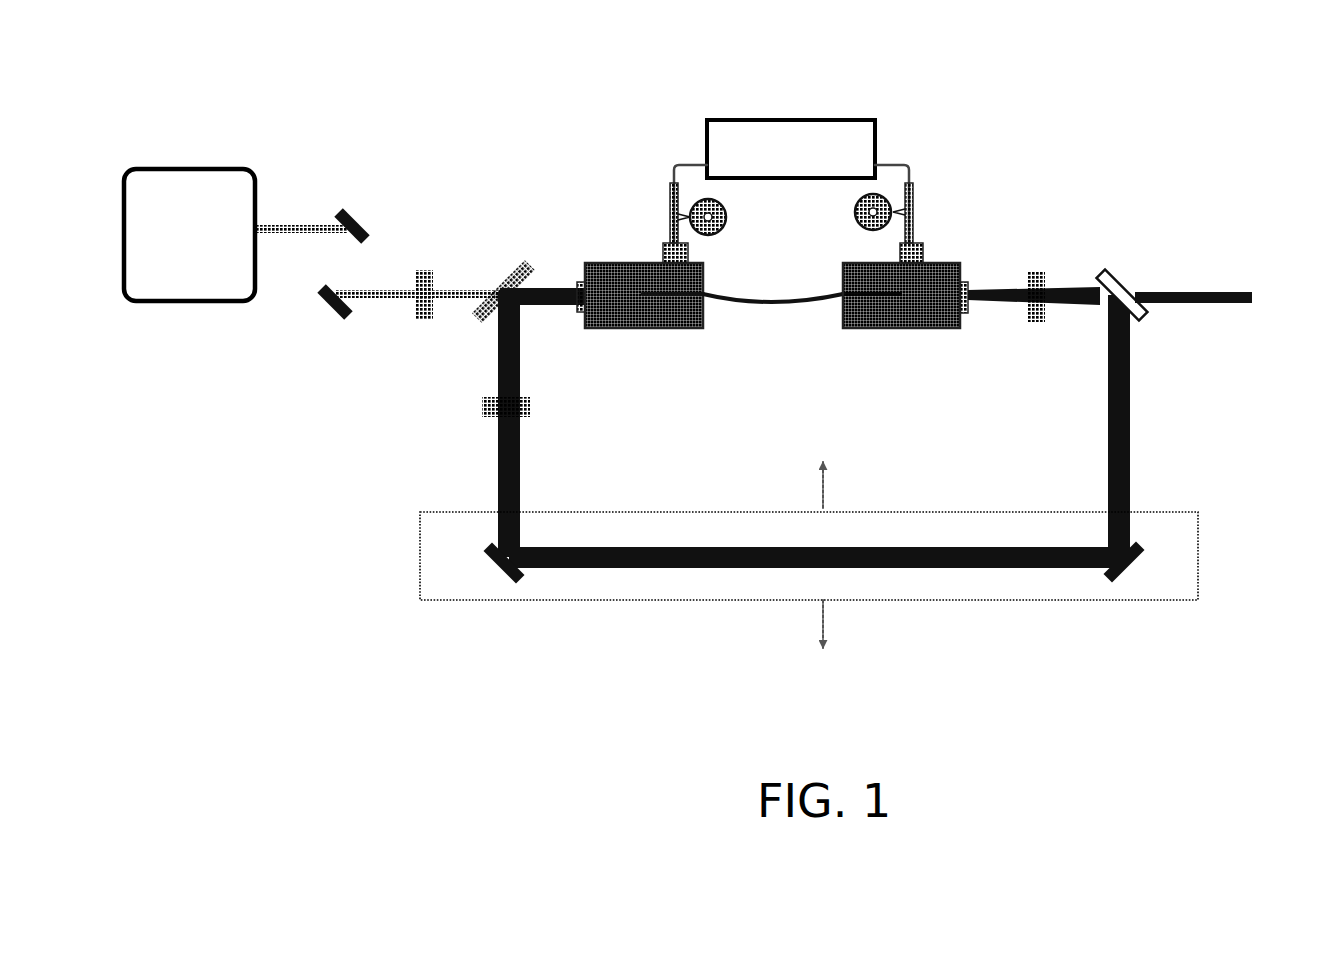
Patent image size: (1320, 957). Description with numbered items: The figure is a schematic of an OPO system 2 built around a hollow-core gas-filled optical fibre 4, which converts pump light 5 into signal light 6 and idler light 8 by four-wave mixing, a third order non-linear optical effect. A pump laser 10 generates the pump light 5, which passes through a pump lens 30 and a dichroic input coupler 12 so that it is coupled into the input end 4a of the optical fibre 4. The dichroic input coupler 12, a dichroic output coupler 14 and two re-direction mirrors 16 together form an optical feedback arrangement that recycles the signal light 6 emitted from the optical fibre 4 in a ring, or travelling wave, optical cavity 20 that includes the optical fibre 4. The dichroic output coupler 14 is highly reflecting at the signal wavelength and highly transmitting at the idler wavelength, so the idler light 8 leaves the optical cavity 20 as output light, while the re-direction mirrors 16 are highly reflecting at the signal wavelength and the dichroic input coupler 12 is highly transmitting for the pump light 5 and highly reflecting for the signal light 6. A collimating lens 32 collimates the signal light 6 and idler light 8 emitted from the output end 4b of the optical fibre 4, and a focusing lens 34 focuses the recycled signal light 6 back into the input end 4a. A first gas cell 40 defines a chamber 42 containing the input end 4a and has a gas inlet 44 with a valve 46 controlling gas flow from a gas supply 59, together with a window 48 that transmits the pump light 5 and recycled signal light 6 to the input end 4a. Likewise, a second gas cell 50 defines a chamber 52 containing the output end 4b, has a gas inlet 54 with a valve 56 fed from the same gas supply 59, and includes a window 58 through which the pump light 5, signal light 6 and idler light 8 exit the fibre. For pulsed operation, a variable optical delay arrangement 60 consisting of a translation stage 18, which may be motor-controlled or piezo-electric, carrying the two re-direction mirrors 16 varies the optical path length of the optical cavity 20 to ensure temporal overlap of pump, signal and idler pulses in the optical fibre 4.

The OPO system 2 is at (245, 616).
The hollow-core gas-filled optical fibre 4 is at (761, 324).
The input end 4a is at (645, 302).
The output end 4b is at (898, 305).
The pump light 5 is at (290, 231).
The signal light 6 is at (1130, 402).
The idler light 8 is at (1245, 283).
The pump laser 10 is at (187, 303).
The dichroic input coupler 12 is at (504, 262).
The dichroic output coupler 14 is at (1128, 266).
The re-direction mirrors 16 is at (500, 567).
The translation stage 18 is at (705, 600).
The optical cavity 20 is at (477, 464).
The pump lens 30 is at (407, 320).
The collimating lens 32 is at (1048, 272).
The focusing lens 34 is at (470, 405).
The first gas cell 40 is at (622, 240).
The chamber 42 is at (607, 312).
The gas inlet 44 is at (668, 212).
The valve 46 is at (733, 228).
The window 48 is at (577, 280).
The second gas cell 50 is at (950, 240).
The chamber 52 is at (932, 315).
The gas inlet 54 is at (917, 210).
The valve 56 is at (848, 215).
The window 58 is at (988, 279).
The gas supply 59 is at (816, 120).
The variable optical delay arrangement 60 is at (600, 612).